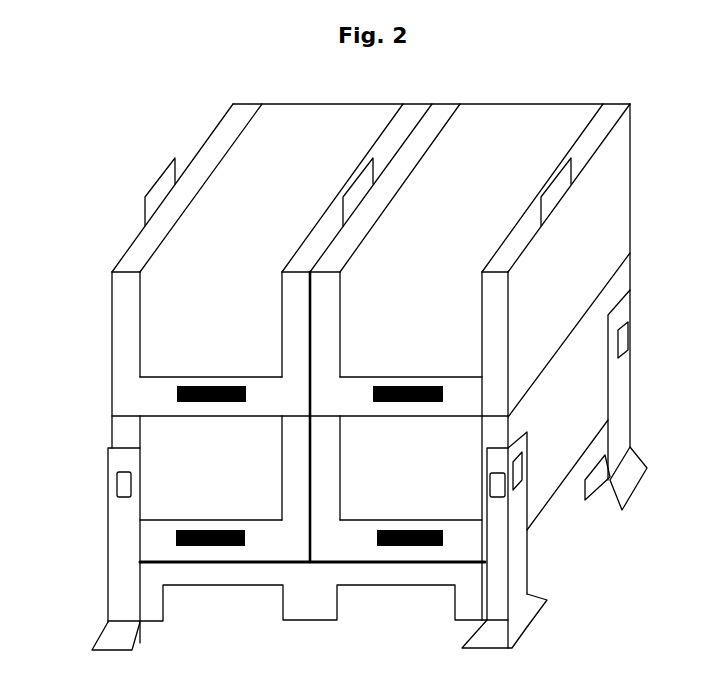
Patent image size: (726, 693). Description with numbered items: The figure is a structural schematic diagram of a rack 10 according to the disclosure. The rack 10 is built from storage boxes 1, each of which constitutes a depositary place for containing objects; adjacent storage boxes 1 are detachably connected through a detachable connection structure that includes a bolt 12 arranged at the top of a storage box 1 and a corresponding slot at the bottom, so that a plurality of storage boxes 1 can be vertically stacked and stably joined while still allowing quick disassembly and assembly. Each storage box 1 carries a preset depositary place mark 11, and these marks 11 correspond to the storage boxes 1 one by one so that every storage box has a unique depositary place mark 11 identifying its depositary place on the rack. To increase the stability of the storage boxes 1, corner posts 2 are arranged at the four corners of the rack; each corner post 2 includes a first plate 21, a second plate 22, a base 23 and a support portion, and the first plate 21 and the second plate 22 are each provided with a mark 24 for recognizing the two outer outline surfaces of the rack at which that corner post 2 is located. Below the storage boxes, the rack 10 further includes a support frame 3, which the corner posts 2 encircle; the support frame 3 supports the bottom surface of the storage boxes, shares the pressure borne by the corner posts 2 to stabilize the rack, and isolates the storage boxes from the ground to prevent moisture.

The rack 10 is at (122, 170).
The storage box 1 is at (567, 273).
The preset depositary place mark 11 is at (445, 396).
The bolt 12 is at (568, 187).
The corner post 2 is at (640, 513).
The first plate 21 is at (495, 532).
The second plate 22 is at (517, 570).
The base 23 is at (498, 638).
The mark 24 is at (497, 487).
The support frame 3 is at (158, 583).